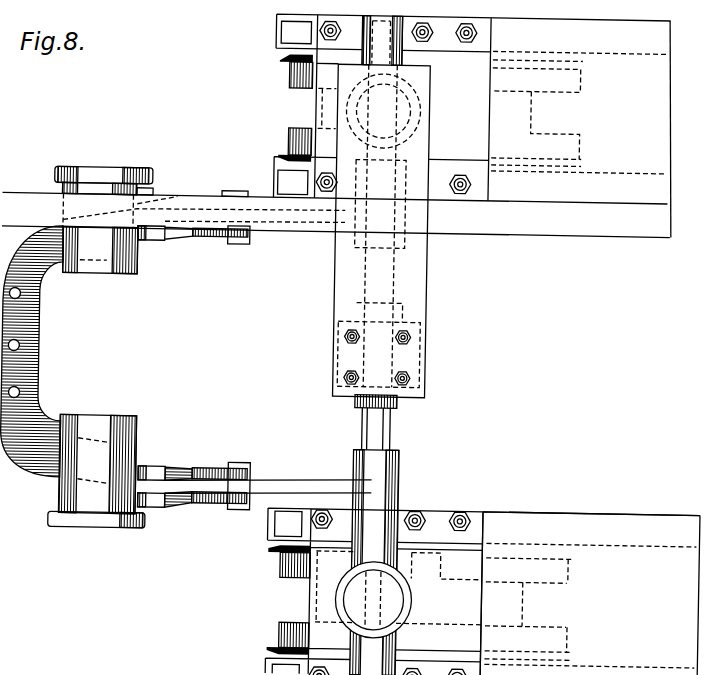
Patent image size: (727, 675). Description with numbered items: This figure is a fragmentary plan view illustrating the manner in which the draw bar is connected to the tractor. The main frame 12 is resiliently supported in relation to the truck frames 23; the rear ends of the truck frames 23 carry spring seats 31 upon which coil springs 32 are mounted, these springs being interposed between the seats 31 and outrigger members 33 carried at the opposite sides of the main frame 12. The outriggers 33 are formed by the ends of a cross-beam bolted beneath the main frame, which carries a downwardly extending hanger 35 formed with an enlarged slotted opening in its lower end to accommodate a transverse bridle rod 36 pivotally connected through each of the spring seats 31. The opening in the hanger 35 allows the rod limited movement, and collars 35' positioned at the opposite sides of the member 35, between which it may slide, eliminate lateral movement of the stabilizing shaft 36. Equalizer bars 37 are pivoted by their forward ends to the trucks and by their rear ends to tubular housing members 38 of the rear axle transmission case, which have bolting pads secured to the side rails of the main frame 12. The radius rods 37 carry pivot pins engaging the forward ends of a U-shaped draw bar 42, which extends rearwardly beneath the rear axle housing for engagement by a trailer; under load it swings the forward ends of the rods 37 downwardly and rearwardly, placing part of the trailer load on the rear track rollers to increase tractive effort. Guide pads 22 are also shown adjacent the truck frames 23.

The main frame 12 is at (336, 216).
The guide pads 22 is at (293, 90).
The truck frames 23 is at (594, 346).
The spring seats 31 is at (479, 148).
The coil springs 32 is at (290, 217).
The outrigger members 33 is at (426, 116).
The hanger 35 is at (360, 354).
The collars 35' is at (420, 404).
The bridle rod 36 is at (392, 444).
The equalizer bars 37 is at (308, 490).
The housing members 38 is at (136, 271).
The draw bar 42 is at (39, 358).